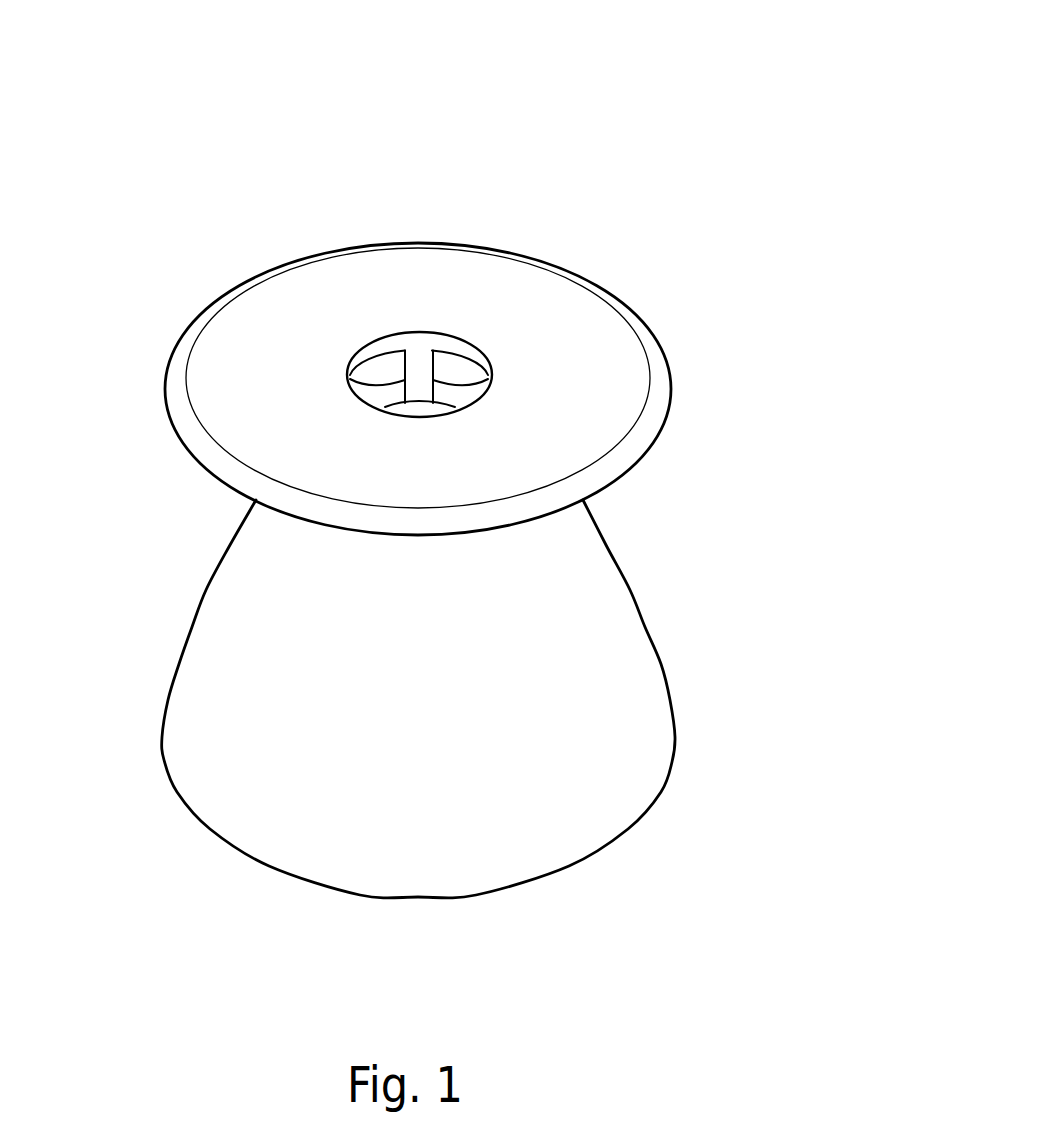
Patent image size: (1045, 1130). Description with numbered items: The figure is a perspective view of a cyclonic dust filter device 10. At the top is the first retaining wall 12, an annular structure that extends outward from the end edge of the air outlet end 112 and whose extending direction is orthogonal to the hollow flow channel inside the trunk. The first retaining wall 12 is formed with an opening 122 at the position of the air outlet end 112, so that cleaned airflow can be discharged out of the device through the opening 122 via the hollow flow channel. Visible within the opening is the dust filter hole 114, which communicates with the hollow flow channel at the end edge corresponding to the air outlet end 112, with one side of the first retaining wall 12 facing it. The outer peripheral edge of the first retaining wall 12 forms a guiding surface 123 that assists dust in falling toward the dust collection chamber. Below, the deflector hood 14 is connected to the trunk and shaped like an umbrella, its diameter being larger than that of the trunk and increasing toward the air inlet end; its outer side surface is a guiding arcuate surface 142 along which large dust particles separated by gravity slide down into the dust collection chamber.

The cyclonic dust filter device 10 is at (718, 39).
The first retaining wall 12 is at (635, 302).
The air outlet end 112 is at (467, 328).
The dust filter hole 114 is at (367, 375).
The opening 122 is at (398, 333).
The guiding surface 123 is at (655, 395).
The deflector hood 14 is at (435, 698).
The guiding arcuate surface 142 is at (207, 592).